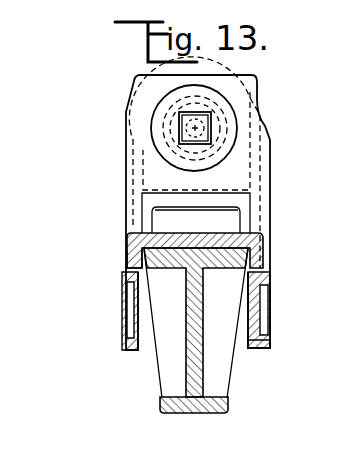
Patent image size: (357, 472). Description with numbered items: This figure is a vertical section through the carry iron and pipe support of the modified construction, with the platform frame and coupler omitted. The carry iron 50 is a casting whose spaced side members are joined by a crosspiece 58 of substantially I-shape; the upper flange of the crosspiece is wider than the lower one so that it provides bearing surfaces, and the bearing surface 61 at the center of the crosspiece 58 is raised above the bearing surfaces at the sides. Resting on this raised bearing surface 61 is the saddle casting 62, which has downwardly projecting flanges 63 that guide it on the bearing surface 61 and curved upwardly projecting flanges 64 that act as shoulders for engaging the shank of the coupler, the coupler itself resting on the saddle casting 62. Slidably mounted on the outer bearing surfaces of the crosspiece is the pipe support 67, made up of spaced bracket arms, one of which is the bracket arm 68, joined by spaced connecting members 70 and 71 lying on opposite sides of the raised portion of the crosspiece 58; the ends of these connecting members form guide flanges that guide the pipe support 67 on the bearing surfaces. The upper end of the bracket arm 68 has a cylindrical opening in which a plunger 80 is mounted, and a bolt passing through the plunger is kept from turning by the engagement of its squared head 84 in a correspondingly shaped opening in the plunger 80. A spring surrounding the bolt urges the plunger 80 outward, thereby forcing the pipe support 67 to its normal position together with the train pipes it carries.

The carry iron 50 is at (200, 414).
The crosspiece 58 is at (195, 380).
The bearing surface 61 is at (247, 252).
The saddle casting 62 is at (128, 235).
The downwardly projecting flanges 63 is at (127, 259).
The curved upwardly projecting flanges 64 is at (227, 220).
The pipe support 67 is at (262, 296).
The bracket arm 68 is at (271, 181).
The connecting member 70 is at (121, 352).
The connecting member 71 is at (263, 348).
The plunger 80 is at (223, 107).
The squared head 84 is at (200, 128).